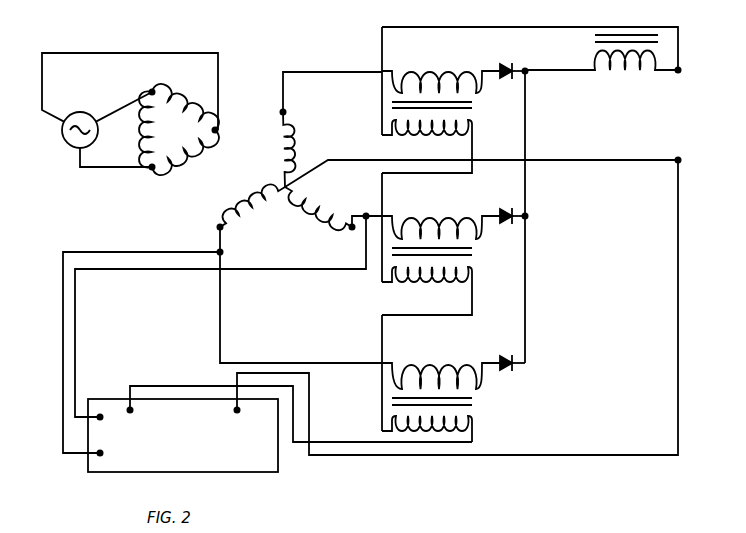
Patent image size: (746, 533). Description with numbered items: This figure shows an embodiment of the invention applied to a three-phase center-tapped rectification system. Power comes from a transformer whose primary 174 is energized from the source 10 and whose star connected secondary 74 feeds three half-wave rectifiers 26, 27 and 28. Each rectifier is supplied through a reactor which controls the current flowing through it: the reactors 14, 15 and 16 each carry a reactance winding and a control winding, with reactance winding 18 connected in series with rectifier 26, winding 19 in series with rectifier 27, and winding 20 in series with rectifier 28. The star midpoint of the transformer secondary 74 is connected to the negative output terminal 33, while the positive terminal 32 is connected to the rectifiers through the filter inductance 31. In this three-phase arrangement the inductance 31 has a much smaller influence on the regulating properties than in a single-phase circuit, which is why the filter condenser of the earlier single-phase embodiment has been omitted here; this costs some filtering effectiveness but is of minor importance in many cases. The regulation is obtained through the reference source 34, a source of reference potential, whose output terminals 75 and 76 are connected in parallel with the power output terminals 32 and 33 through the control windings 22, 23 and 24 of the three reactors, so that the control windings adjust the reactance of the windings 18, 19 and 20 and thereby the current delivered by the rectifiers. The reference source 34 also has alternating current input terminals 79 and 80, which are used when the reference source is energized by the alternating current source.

The source 10 is at (62, 136).
The primary 174 is at (174, 94).
The star connected secondary 74 is at (268, 163).
The reactor 14 is at (476, 107).
The reactor 15 is at (470, 249).
The reactor 16 is at (478, 398).
The reactance winding 18 is at (451, 71).
The reactance winding 19 is at (456, 217).
The reactance winding 20 is at (440, 370).
The control winding 22 is at (425, 135).
The control winding 23 is at (440, 284).
The control winding 24 is at (472, 430).
The half-wave rectifier 26 is at (502, 68).
The half-wave rectifier 27 is at (508, 215).
The half-wave rectifier 28 is at (499, 362).
The filter inductance 31 is at (629, 70).
The positive terminal 32 is at (675, 73).
The negative output terminal 33 is at (673, 170).
The reference source 34 is at (278, 462).
The output terminal 75 is at (130, 406).
The output terminal 76 is at (237, 405).
The alternating current input terminal 79 is at (75, 416).
The alternating current input terminal 80 is at (93, 455).